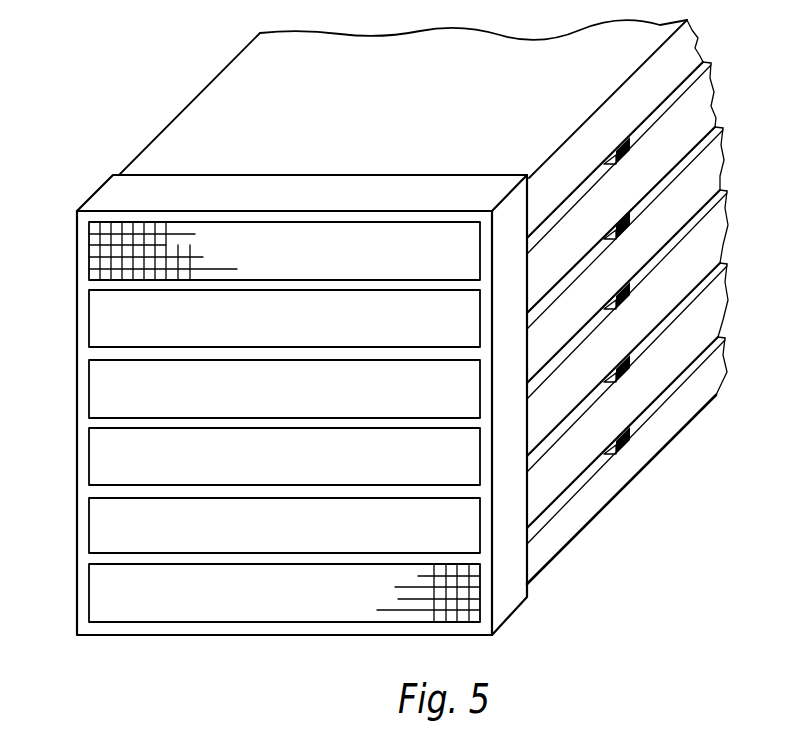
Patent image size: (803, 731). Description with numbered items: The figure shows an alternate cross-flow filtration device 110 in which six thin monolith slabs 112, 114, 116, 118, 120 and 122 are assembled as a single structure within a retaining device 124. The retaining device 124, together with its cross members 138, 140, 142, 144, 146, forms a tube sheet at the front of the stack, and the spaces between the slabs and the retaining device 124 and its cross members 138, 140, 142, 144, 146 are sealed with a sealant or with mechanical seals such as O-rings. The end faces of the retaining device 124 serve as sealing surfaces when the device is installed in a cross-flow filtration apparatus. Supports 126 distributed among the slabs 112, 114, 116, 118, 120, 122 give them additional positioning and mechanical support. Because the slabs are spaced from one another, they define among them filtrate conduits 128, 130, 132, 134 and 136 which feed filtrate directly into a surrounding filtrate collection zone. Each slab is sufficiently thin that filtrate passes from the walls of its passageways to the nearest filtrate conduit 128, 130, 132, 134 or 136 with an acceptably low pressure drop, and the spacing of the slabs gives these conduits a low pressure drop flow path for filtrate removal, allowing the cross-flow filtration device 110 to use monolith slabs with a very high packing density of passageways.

The cross-flow filtration device 110 is at (419, 101).
The monolith slab 112 is at (700, 40).
The monolith slab 114 is at (700, 106).
The monolith slab 116 is at (706, 165).
The monolith slab 118 is at (706, 233).
The monolith slab 120 is at (706, 306).
The monolith slab 122 is at (708, 373).
The retaining device 124 is at (313, 215).
The supports 126 is at (630, 152).
The filtrate conduit 128 is at (566, 205).
The filtrate conduit 130 is at (566, 274).
The filtrate conduit 132 is at (566, 344).
The filtrate conduit 134 is at (566, 412).
The filtrate conduit 136 is at (570, 480).
The cross member 138 is at (318, 285).
The cross member 140 is at (320, 356).
The cross member 142 is at (322, 423).
The cross member 144 is at (325, 493).
The cross member 146 is at (328, 561).